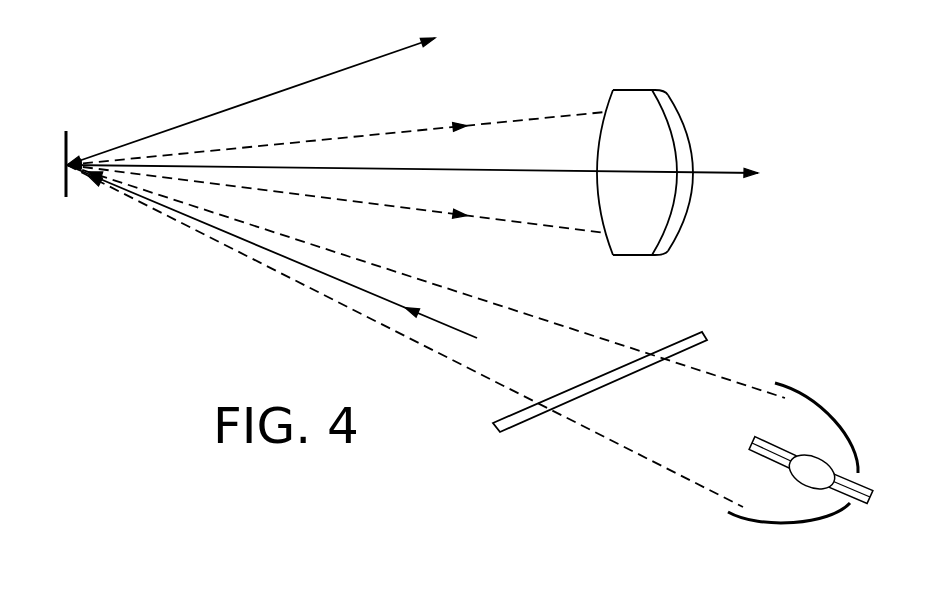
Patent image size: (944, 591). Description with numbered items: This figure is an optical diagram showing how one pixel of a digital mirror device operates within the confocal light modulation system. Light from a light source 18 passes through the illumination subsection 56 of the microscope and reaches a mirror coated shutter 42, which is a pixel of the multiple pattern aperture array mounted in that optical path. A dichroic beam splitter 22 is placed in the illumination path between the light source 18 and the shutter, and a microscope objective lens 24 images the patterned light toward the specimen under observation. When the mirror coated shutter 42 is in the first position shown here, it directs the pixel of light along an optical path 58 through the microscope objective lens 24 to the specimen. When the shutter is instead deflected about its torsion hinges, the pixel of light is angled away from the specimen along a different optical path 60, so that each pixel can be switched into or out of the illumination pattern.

The light source 18 is at (810, 400).
The dichroic beam splitter 22 is at (675, 338).
The microscope objective lens 24 is at (683, 108).
The mirror coated shutter 42 is at (67, 190).
The illumination subsection 56 is at (487, 323).
The optical path 58 is at (715, 173).
The optical path 60 is at (382, 58).